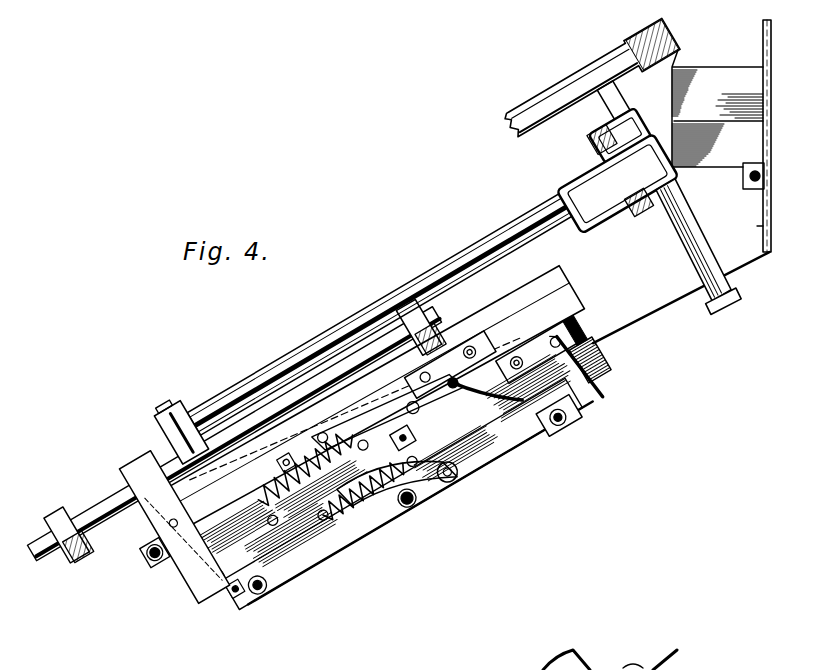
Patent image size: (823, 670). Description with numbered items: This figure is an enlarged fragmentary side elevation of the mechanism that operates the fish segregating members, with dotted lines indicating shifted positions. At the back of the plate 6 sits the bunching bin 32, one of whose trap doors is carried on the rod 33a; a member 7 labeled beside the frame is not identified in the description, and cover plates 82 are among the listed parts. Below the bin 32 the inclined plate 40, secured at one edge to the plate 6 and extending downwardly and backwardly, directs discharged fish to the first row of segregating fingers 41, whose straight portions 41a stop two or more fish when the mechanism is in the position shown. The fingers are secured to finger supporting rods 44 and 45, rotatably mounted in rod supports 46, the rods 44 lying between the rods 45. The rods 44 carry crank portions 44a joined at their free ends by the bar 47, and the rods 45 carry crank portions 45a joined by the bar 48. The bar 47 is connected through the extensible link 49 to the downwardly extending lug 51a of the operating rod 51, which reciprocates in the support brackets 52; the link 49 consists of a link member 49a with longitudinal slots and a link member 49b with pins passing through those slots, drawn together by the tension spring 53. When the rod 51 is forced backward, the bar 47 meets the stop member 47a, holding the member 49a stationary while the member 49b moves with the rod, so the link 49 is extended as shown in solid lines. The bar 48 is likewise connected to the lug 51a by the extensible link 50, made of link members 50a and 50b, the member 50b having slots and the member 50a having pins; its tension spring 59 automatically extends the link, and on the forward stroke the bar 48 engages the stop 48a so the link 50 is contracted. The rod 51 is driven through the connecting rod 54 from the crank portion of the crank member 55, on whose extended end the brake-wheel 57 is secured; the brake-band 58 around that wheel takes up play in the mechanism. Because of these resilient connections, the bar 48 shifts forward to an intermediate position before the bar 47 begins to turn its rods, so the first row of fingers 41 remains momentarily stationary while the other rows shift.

The plate 6 is at (772, 136).
The frame member 7 is at (757, 226).
The bunching bin 32 is at (672, 88).
The rod 33a is at (748, 186).
The inclined plate 40 is at (660, 306).
The segregating fingers 41 is at (573, 643).
The straight portions 41a is at (588, 669).
The segregating finger supporting rods 44 is at (603, 358).
The crank portions 44a is at (588, 389).
The segregating finger supporting rods 45 is at (522, 392).
The crank portions 45a is at (483, 385).
The rod supports 46 is at (600, 380).
The rod actuating bar 47 is at (545, 425).
The stop member 47a is at (245, 592).
The rod actuating bar 48 is at (253, 477).
The stop 48a is at (573, 323).
The extensible bar actuating link 49 is at (327, 522).
The link member 49a is at (412, 497).
The link member 49b is at (322, 556).
The extensible bar actuating link 50 is at (380, 420).
The link member 50a is at (396, 445).
The link member 50b is at (260, 455).
The operating rod 51 is at (98, 511).
The lug 51a is at (200, 570).
The support 52 is at (415, 315).
The spring 53 is at (350, 518).
The connecting rod 54 is at (328, 338).
The crank member 55 is at (615, 110).
The brake-wheel 57 is at (553, 90).
The brake-band 58 is at (537, 105).
The spring 59 is at (288, 462).
The cover plates 82 is at (672, 656).